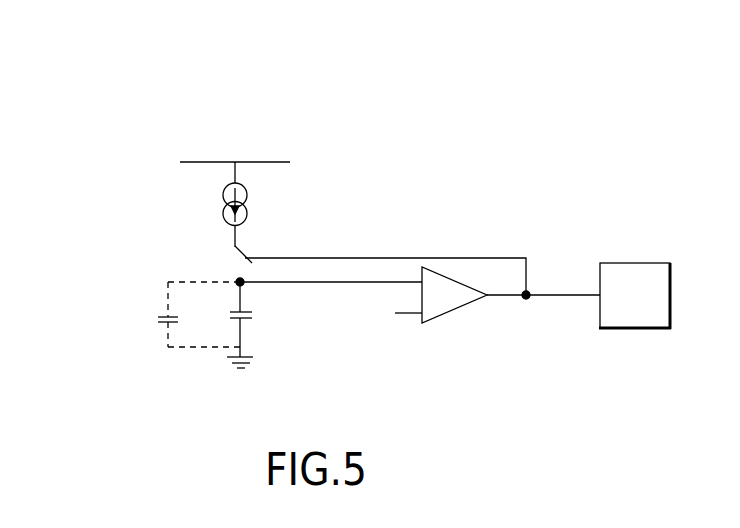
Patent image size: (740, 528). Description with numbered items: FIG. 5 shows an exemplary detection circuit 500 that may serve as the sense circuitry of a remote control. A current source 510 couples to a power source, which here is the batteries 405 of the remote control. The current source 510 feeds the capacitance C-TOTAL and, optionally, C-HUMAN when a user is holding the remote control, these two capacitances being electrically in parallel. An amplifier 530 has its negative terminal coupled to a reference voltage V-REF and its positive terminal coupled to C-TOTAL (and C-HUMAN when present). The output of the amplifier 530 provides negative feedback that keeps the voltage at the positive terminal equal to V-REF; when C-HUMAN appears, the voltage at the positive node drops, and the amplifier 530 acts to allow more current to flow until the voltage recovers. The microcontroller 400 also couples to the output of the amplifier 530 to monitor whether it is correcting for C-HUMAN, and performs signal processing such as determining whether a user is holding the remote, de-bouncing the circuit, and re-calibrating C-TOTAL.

The batteries 405 is at (267, 138).
The current source 510 is at (247, 214).
The capacitive sensing circuit 500 is at (90, 207).
The amplifier 530 is at (453, 308).
The microcontroller 400 is at (612, 329).